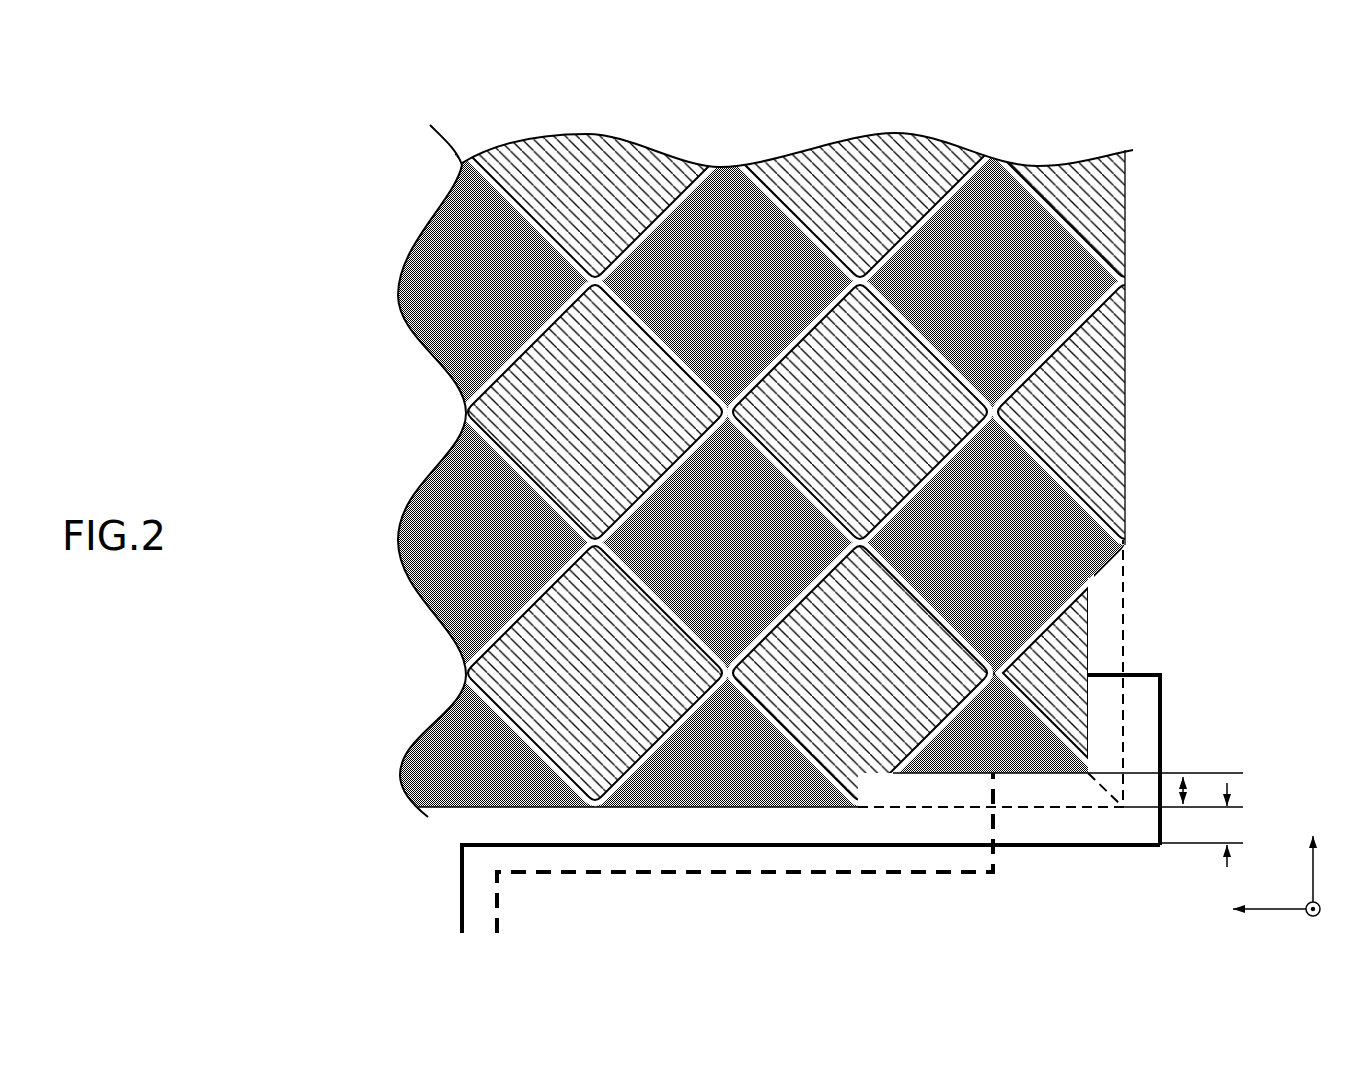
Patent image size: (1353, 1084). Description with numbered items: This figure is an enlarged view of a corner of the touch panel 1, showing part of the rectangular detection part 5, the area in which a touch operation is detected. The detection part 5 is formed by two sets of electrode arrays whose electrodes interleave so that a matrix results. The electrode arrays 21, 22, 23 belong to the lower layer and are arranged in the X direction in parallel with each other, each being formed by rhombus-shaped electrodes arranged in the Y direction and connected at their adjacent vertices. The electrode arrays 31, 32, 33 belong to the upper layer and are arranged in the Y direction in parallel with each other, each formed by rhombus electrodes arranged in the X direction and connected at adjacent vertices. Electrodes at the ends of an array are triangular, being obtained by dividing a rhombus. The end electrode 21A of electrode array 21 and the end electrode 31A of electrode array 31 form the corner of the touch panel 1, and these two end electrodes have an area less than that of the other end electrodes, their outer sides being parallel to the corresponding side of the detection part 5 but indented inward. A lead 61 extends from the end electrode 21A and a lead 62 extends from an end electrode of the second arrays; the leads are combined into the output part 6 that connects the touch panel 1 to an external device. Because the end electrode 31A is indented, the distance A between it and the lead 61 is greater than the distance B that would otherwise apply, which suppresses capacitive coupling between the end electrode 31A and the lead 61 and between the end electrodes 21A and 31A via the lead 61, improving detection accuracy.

The touch panel 1 is at (807, 485).
The detection part 5 is at (790, 479).
The output part 6 is at (775, 809).
The lead 61 is at (1100, 846).
The lead 62 is at (750, 878).
The electrode array 21 is at (773, 673).
The electrode array 22 is at (407, 413).
The electrode array 23 is at (405, 167).
The end electrode 21A is at (1078, 632).
The electrode array 31 is at (993, 499).
The electrode array 32 is at (730, 138).
The electrode array 33 is at (462, 136).
The end electrode 31A is at (1017, 763).